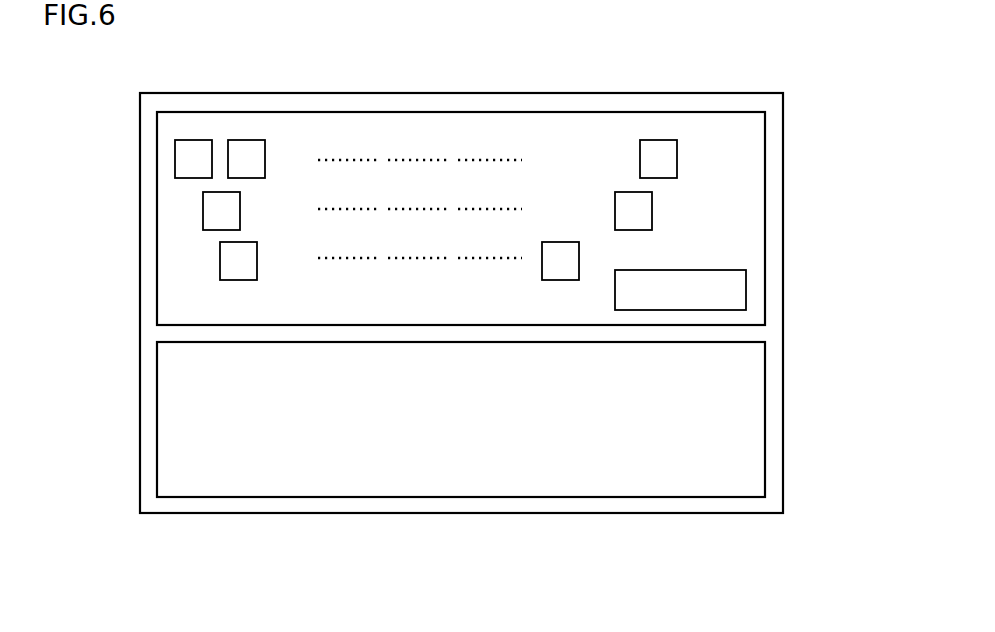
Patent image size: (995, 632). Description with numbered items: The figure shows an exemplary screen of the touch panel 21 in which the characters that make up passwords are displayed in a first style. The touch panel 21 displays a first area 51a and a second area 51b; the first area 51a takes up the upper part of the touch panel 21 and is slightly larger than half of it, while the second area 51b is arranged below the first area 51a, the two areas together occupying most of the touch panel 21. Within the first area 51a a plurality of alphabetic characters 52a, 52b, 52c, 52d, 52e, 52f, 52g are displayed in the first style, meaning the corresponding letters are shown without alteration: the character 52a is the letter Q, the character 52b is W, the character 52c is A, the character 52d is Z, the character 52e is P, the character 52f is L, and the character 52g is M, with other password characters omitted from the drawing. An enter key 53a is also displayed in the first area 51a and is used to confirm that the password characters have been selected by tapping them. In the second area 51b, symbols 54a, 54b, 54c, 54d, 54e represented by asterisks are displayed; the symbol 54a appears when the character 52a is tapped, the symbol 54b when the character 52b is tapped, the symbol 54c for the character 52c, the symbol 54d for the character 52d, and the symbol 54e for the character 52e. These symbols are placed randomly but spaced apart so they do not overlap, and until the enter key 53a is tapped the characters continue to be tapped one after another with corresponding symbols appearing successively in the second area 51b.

The touch panel 21 is at (746, 93).
The first area 51a is at (697, 112).
The second area 51b is at (186, 497).
The character 52a is at (190, 140).
The character 52b is at (250, 140).
The character 52c is at (203, 212).
The character 52d is at (220, 262).
The character 52e is at (656, 140).
The character 52f is at (622, 192).
The character 52g is at (579, 253).
The enter key 53a is at (746, 281).
The symbol 54a is at (462, 420).
The symbol 54b is at (350, 457).
The symbol 54c is at (668, 413).
The symbol 54d is at (250, 410).
The symbol 54e is at (508, 452).